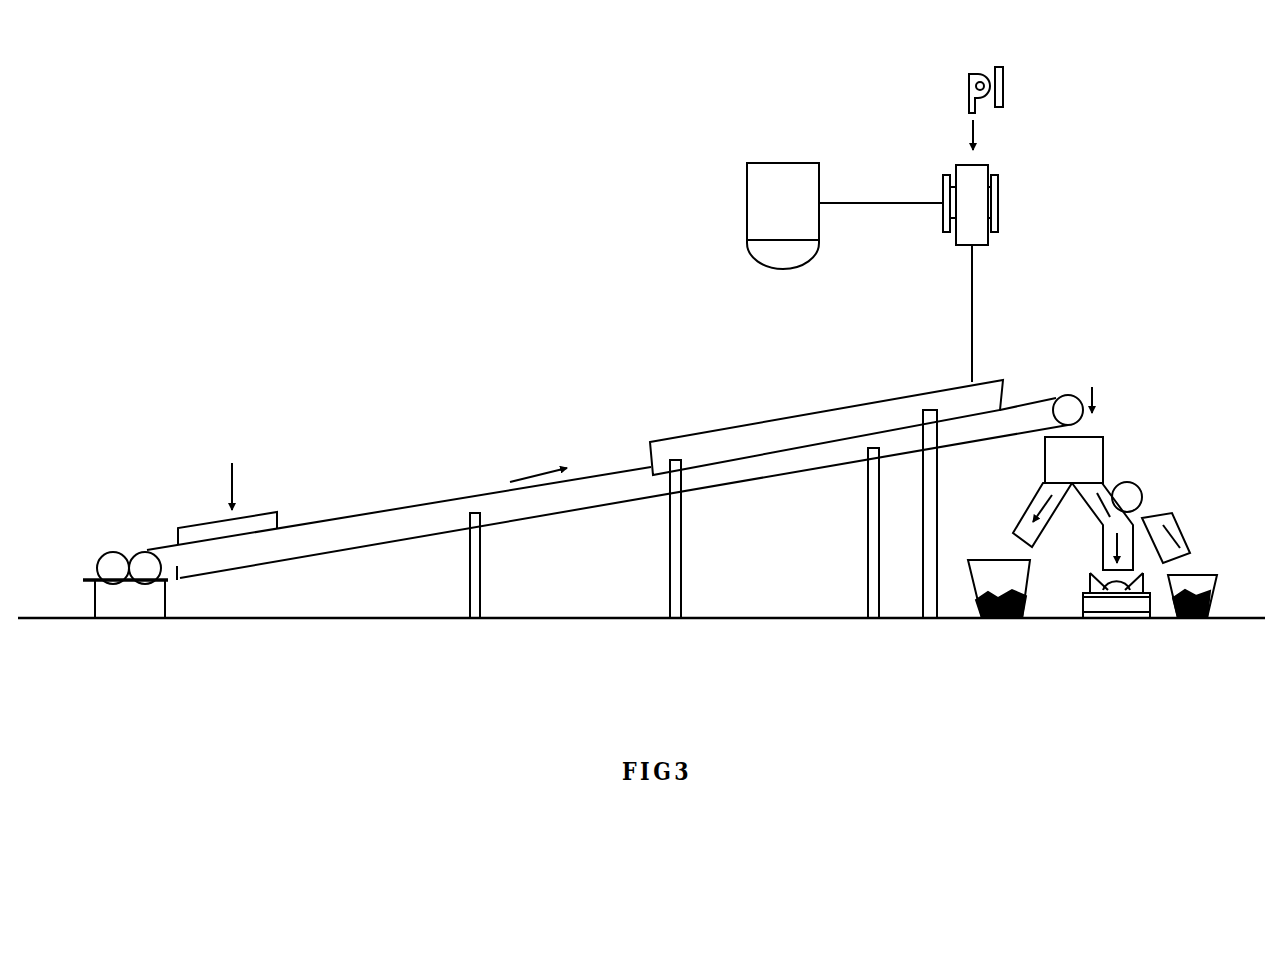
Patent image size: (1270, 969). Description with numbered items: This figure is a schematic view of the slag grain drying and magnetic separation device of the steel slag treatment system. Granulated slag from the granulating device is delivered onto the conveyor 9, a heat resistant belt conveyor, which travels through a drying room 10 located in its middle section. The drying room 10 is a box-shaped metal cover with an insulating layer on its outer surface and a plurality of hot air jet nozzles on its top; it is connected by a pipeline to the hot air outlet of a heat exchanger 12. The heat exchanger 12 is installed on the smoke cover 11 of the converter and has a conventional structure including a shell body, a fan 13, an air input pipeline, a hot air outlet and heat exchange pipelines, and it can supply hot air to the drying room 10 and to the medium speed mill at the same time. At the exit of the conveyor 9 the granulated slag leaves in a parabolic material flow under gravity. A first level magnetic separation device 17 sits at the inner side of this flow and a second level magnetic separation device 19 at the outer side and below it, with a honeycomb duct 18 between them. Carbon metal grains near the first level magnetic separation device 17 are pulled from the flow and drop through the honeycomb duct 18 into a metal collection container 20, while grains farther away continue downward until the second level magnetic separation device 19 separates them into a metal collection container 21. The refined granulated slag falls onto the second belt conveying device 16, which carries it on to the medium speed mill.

The conveyor 9 is at (508, 490).
The drying room 10 is at (727, 445).
The smoke cover 11 is at (782, 185).
The heat exchanger 12 is at (967, 190).
The fan 13 is at (977, 73).
The second belt conveying device 16 is at (1100, 578).
The first level magnetic separation device 17 is at (1068, 395).
The honeycomb duct 18 is at (1100, 437).
The second level magnetic separation device 19 is at (1122, 487).
The metal collection container 20 is at (1003, 568).
The metal collection container 21 is at (1205, 578).